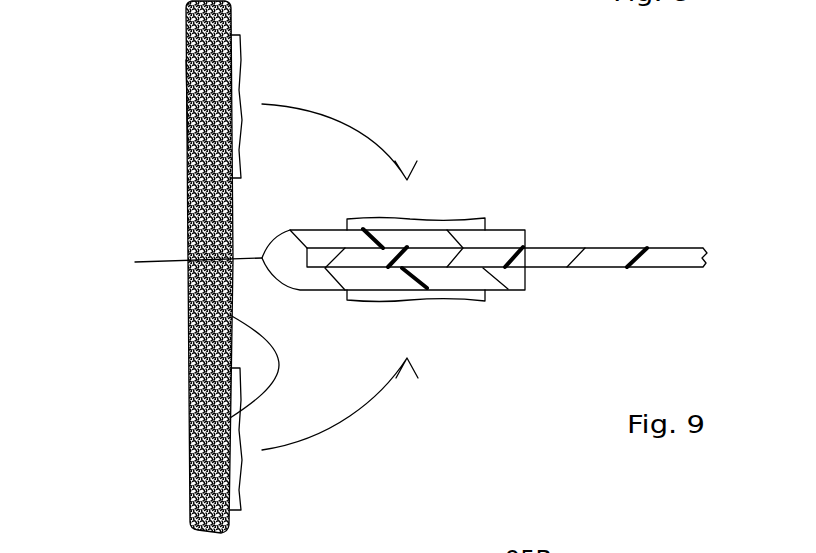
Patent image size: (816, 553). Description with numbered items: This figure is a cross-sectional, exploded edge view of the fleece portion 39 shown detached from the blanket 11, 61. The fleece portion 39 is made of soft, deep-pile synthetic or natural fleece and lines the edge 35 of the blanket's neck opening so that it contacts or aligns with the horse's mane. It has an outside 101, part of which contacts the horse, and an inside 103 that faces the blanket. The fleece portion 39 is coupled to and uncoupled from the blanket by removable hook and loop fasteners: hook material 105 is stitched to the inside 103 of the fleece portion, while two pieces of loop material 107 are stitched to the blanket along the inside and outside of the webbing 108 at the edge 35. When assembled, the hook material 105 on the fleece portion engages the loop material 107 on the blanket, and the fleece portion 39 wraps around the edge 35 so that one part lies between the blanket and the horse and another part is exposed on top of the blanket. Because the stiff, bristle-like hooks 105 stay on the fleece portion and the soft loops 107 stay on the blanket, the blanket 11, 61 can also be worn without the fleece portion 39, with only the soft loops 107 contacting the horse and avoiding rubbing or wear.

The outside 101 is at (188, 357).
The fleece portion 39 is at (200, 105).
The hook material 105 is at (237, 78).
The inside 103 is at (232, 418).
The edge 35 is at (170, 269).
The webbing 108 is at (467, 282).
The horse blanket 11 is at (507, 198).
The blanket 61 is at (600, 248).
The loop material 107 is at (472, 219).